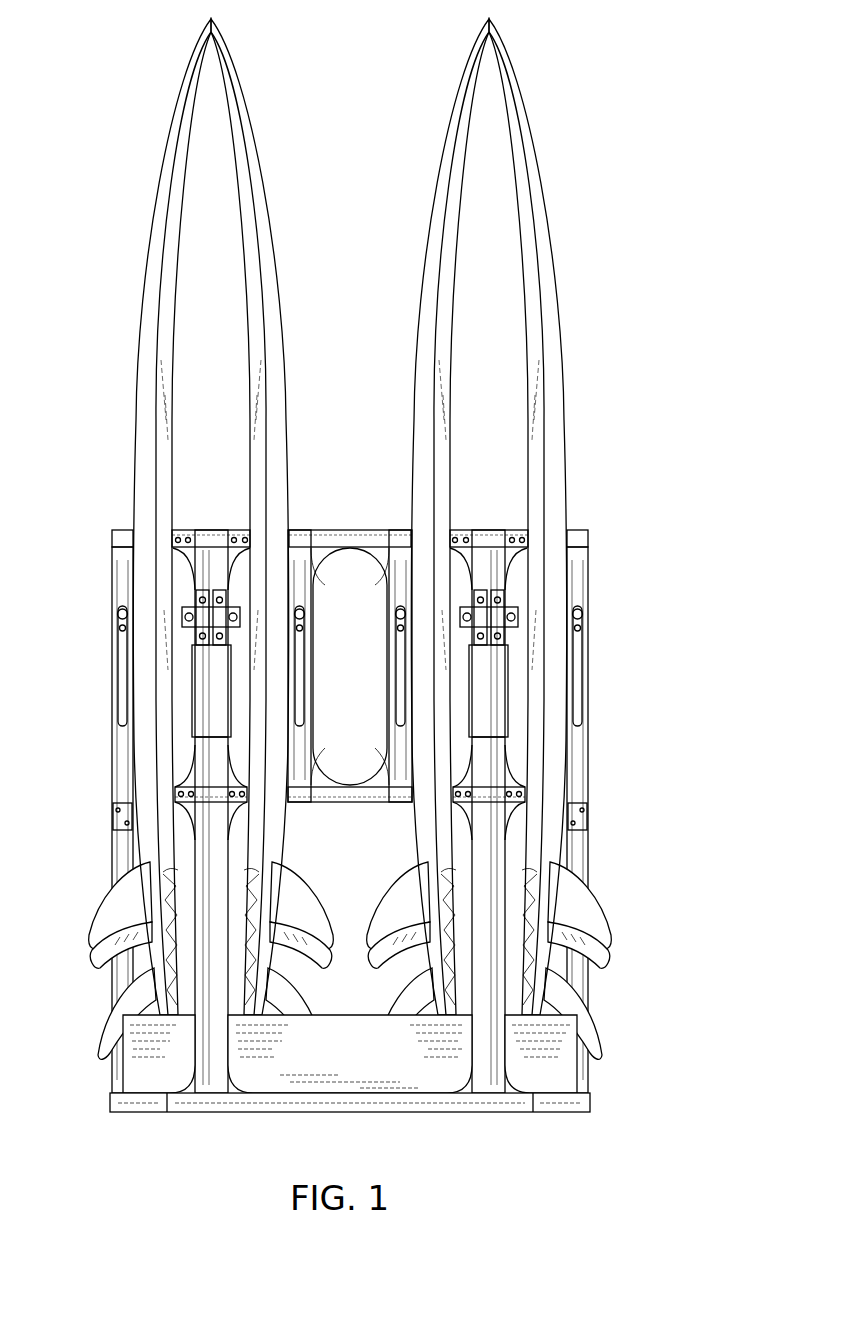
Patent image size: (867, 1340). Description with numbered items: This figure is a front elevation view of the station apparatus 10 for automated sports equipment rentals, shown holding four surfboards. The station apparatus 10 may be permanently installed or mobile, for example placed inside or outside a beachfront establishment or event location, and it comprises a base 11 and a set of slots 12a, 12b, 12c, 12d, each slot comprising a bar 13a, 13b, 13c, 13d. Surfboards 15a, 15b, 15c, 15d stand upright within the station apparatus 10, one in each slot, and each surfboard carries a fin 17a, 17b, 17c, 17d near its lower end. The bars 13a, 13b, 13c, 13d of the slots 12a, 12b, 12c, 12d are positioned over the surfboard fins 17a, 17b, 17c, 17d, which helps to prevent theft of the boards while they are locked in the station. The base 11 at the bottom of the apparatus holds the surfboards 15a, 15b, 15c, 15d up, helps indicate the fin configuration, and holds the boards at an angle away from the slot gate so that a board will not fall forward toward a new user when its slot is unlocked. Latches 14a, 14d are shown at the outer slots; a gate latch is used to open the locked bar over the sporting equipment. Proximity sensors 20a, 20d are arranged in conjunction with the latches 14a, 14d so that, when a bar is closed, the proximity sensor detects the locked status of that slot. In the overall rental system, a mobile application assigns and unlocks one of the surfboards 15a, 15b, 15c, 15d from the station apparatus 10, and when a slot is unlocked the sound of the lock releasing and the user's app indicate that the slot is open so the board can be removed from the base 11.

The station apparatus 10 is at (457, 695).
The base 11 is at (148, 1078).
The slot 12a is at (86, 768).
The slot 12b is at (151, 765).
The slot 12c is at (549, 767).
The slot 12d is at (610, 773).
The bar 13a is at (118, 712).
The bar 13b is at (313, 708).
The bar 13c is at (387, 708).
The bar 13d is at (583, 712).
The latch 14a is at (190, 598).
The latch 14d is at (488, 600).
The surfboard 15a is at (140, 272).
The surfboard 15b is at (262, 150).
The surfboard 15c is at (420, 272).
The surfboard 15d is at (538, 130).
The fin 17a is at (86, 948).
The fin 17b is at (337, 946).
The fin 17c is at (366, 948).
The fin 17d is at (614, 942).
The proximity sensor 20a is at (190, 612).
The proximity sensor 20d is at (508, 603).